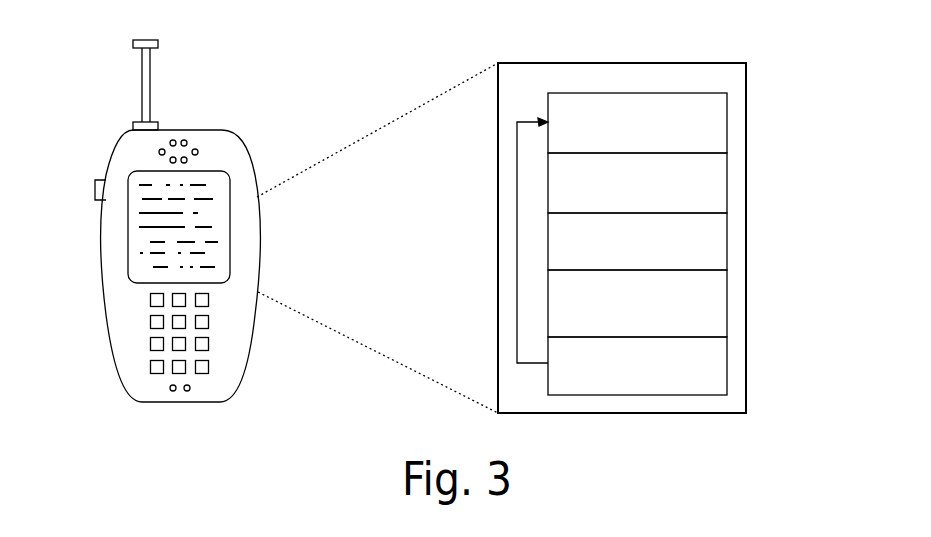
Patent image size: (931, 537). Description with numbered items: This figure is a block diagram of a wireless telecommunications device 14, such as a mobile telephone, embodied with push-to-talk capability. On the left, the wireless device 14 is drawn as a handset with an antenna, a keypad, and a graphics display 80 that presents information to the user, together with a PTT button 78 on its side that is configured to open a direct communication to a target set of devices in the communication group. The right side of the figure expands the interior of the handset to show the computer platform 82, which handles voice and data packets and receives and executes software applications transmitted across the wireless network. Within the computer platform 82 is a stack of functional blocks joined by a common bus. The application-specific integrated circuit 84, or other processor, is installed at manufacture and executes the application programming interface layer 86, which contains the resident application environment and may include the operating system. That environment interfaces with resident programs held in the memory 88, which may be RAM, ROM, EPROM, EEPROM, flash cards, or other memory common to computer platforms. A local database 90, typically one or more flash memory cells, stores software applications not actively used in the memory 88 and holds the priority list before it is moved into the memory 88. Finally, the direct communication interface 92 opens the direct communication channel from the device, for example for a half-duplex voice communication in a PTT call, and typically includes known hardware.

The wireless telecommunications device 14 is at (220, 128).
The PTT button 78 is at (93, 184).
The graphics display 80 is at (128, 240).
The computer platform 82 is at (498, 203).
The application-specific integrated circuit 84 is at (727, 242).
The application programming interface layer 86 is at (727, 183).
The memory 88 is at (727, 124).
The local database 90 is at (727, 347).
The direct communication interface 92 is at (727, 302).